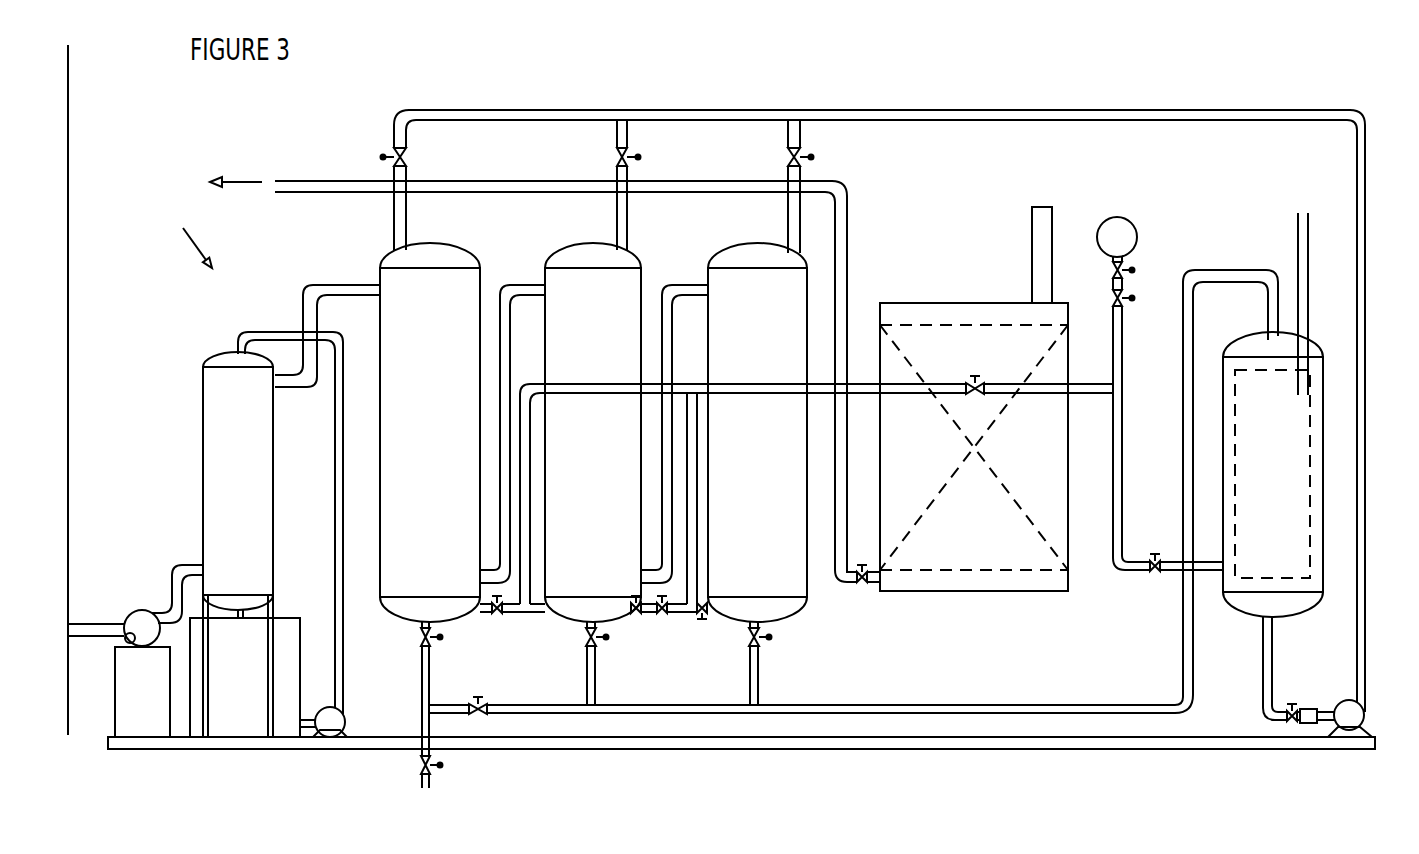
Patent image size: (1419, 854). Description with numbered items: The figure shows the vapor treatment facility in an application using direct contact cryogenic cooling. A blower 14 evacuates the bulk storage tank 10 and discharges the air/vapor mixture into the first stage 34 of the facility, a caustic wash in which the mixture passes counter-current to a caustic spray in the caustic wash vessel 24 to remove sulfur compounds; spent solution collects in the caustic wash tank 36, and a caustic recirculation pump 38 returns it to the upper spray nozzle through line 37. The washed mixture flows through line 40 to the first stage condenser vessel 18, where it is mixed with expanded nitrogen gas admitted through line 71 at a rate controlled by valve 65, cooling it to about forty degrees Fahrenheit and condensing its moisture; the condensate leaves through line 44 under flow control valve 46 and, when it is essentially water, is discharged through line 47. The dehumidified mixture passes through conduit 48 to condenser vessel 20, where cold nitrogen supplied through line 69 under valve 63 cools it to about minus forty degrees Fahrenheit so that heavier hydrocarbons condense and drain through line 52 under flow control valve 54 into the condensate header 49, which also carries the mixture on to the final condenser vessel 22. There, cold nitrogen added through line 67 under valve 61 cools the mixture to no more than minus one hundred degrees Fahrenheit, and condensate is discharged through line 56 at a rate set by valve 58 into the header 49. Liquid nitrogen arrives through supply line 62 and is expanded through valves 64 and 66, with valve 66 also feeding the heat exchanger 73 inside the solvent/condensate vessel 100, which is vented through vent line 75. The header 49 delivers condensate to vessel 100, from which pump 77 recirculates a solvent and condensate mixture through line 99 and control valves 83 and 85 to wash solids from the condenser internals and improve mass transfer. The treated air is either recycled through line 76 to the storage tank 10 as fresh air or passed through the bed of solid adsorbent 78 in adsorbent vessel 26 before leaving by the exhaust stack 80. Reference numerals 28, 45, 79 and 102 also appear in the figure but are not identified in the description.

The bulk storage tank 10 is at (68, 213).
The blower 14 is at (140, 628).
The first stage condenser vessel 18 is at (408, 297).
The condenser vessel 20 is at (577, 250).
The final condenser vessel 22 is at (772, 253).
The caustic wash vessel 24 is at (208, 402).
The adsorbent vessel 26 is at (1000, 358).
The base skid 28 is at (1108, 745).
The first stage of the treatment facility 34 is at (186, 229).
The caustic wash tank 36 is at (243, 722).
The line 37 is at (342, 397).
The caustic recirculation pump 38 is at (333, 728).
The line 40 is at (303, 297).
The line 44 is at (420, 712).
The valve 45 is at (480, 712).
The flow control valve 46 is at (420, 637).
The line 47 is at (440, 770).
The conduit 48 is at (523, 290).
The condensate header 49 is at (690, 290).
The line 52 is at (593, 700).
The flow control valve 54 is at (585, 637).
The line 56 is at (770, 636).
The valve 58 is at (740, 710).
The valve 61 is at (703, 621).
The supply line 62 is at (885, 390).
The valve 63 is at (663, 614).
The valve 64 is at (977, 394).
The valve 65 is at (497, 615).
The valve 66 is at (1157, 571).
The line 67 is at (712, 606).
The line 69 is at (633, 603).
The line 71 is at (432, 399).
The heat exchanger 73 is at (1335, 405).
The vent line 75 is at (1297, 233).
The line 76 is at (317, 180).
The pump 77 is at (1352, 708).
The solid adsorbent 78 is at (950, 310).
The drain line 79 is at (1263, 703).
The exhaust stack 80 is at (1030, 217).
The valve 83 is at (400, 150).
The control valve 85 is at (620, 150).
The line 99 is at (1362, 340).
The solvent/condensate vessel 100 is at (1257, 330).
The nitrogen supply conduit 102 is at (1127, 442).